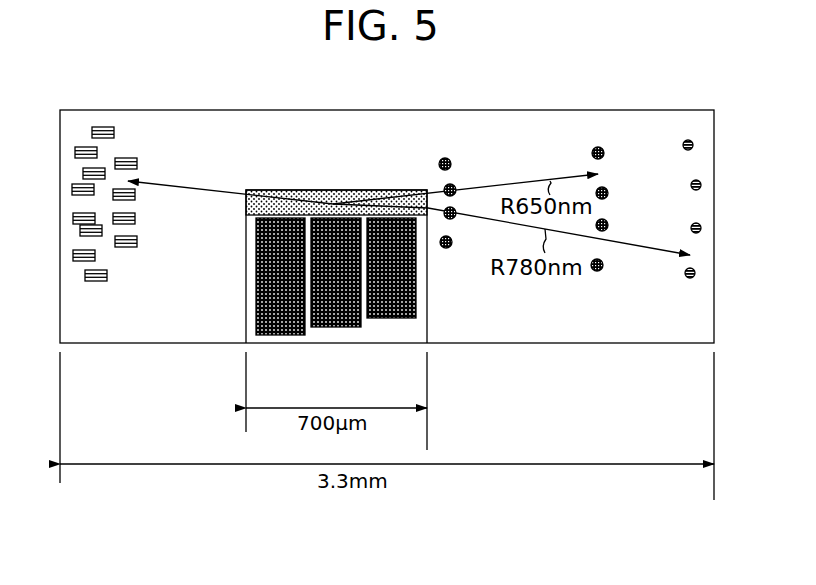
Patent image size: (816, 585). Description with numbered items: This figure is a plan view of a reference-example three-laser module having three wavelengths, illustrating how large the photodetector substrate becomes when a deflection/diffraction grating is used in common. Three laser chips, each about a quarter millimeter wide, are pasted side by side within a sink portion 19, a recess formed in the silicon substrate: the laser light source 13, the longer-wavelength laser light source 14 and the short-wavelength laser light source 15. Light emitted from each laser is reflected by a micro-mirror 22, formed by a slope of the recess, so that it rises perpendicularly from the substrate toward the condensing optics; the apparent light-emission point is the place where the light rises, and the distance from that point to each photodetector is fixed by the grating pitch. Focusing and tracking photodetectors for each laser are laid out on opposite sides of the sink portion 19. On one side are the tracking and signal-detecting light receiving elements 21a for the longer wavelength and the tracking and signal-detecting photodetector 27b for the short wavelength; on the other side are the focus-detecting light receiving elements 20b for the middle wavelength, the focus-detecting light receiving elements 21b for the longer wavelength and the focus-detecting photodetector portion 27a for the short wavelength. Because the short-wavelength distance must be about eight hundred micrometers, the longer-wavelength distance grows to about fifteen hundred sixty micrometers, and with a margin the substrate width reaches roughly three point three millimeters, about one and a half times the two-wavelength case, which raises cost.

The laser light source 13 is at (340, 320).
The 780 nm wavelength laser light source 14 is at (410, 293).
The 410 nm wavelength laser light source 15 is at (262, 295).
The sink portion 19 is at (410, 332).
The focus-detecting light receiving elements 20b is at (605, 153).
The tracking and signal-detecting light receiving elements 21a is at (103, 126).
The focus-detecting light receiving elements 21b is at (702, 184).
The micro-mirror 22 is at (312, 192).
The focus-detecting photodetector portion 27a is at (138, 163).
The tracking and signal-detecting photodetector 27b is at (452, 163).